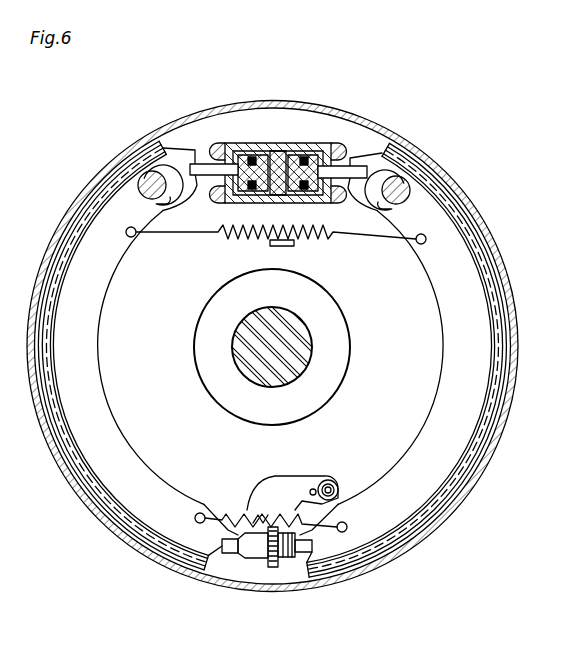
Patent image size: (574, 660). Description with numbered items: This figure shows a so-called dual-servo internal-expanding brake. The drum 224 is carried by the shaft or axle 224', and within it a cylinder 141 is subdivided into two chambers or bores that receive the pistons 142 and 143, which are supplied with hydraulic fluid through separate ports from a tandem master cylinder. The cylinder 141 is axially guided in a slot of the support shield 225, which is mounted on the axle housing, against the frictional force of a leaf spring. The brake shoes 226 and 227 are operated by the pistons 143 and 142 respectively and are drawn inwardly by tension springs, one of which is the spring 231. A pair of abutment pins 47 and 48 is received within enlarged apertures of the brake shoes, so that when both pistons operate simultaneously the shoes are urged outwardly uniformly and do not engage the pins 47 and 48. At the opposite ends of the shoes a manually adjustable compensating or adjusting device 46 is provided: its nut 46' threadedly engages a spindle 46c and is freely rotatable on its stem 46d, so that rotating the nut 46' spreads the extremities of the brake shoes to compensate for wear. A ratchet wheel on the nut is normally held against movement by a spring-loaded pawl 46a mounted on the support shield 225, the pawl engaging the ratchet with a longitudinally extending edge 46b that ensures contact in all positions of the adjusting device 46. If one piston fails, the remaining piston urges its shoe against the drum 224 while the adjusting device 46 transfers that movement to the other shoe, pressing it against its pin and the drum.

The abutment pin 47 is at (165, 255).
The abutment pin 48 is at (390, 257).
The cylinder 141 is at (278, 150).
The piston 142 is at (243, 150).
The piston 143 is at (260, 127).
The drum 224 is at (272, 331).
The shaft or axle 224' is at (299, 345).
The support shield 225 is at (173, 483).
The brake shoe 226 is at (422, 213).
The brake shoe 227 is at (205, 547).
The return spring 231 is at (276, 159).
The adjusting device 46 is at (269, 576).
The nut 46' is at (263, 519).
The spring-loaded pawl 46a is at (326, 479).
The longitudinally extending edge 46b is at (253, 523).
The spindle 46c is at (358, 573).
The stem 46d is at (225, 554).